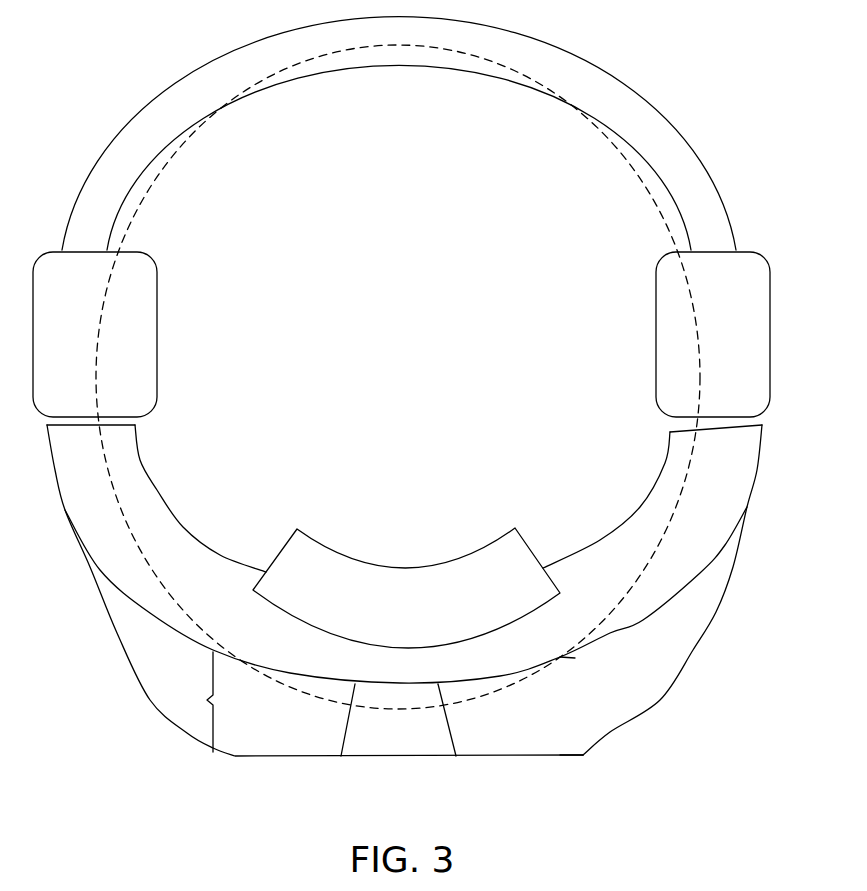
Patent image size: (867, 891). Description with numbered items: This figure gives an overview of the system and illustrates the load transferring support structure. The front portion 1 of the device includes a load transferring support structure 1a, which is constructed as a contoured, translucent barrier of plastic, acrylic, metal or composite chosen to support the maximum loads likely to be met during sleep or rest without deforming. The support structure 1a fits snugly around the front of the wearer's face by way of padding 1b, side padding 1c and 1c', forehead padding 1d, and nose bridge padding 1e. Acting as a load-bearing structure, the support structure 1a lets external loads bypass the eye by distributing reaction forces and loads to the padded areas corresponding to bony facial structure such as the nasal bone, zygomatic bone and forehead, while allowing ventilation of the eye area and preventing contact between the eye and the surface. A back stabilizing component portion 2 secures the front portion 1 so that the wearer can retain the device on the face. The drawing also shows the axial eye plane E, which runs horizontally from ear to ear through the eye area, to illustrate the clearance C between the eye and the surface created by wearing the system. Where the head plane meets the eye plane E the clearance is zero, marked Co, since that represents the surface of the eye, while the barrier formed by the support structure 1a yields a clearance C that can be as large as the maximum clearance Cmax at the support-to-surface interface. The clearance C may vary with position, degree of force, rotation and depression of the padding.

The front portion 1 is at (147, 707).
The load transferring support structure 1a is at (690, 628).
The padding 1b is at (175, 532).
The side padding 1c is at (117, 334).
The side padding 1c' is at (691, 334).
The forehead padding 1d is at (428, 588).
The nose bridge padding 1e is at (435, 738).
The back stabilizing component portion 2 is at (704, 178).
The axial eye plane E is at (158, 175).
The clearance C is at (202, 702).
The zero clearance Co is at (573, 657).
The maximum clearance Cmax is at (583, 755).